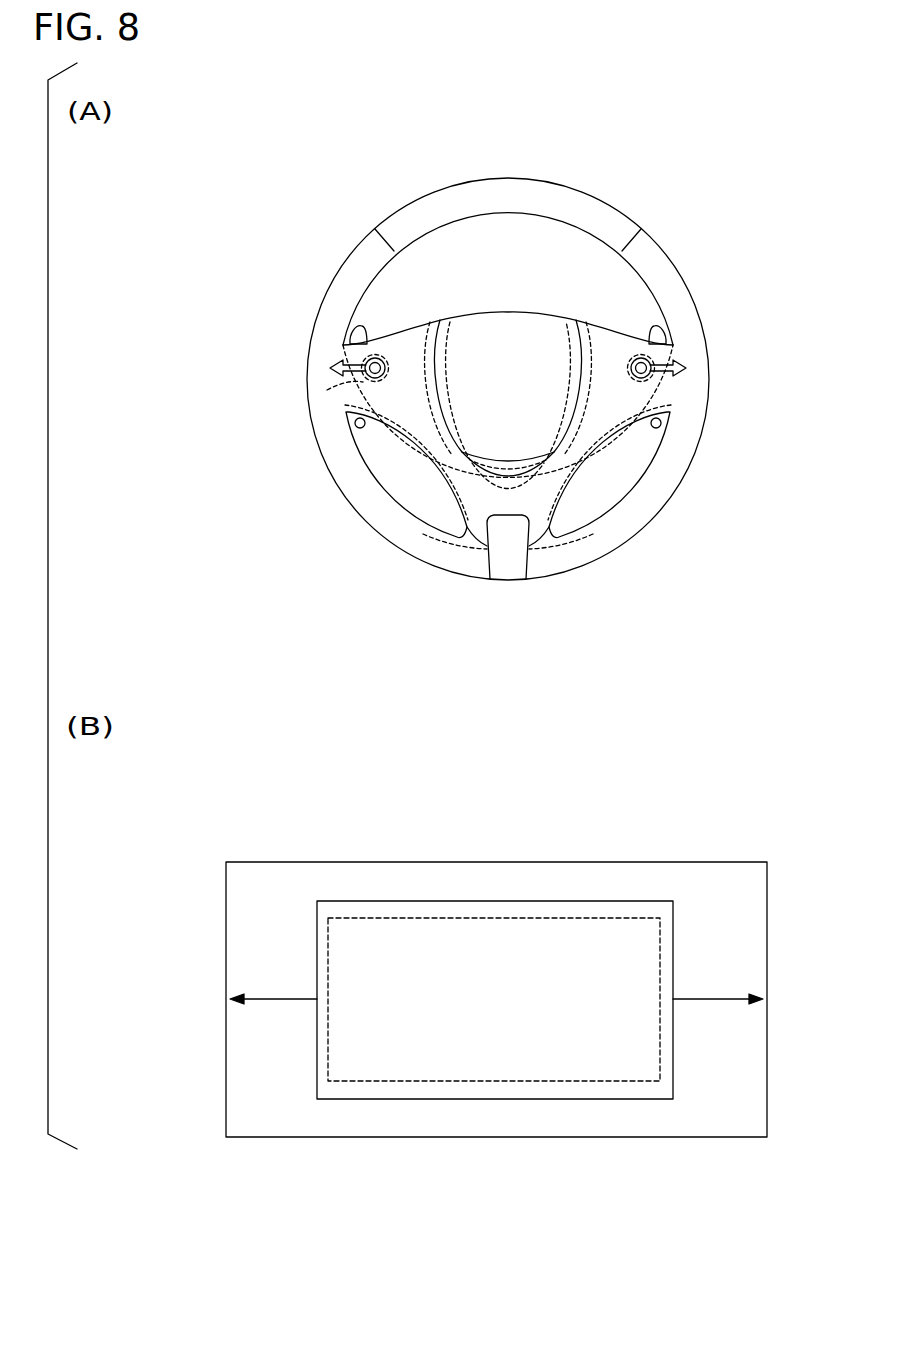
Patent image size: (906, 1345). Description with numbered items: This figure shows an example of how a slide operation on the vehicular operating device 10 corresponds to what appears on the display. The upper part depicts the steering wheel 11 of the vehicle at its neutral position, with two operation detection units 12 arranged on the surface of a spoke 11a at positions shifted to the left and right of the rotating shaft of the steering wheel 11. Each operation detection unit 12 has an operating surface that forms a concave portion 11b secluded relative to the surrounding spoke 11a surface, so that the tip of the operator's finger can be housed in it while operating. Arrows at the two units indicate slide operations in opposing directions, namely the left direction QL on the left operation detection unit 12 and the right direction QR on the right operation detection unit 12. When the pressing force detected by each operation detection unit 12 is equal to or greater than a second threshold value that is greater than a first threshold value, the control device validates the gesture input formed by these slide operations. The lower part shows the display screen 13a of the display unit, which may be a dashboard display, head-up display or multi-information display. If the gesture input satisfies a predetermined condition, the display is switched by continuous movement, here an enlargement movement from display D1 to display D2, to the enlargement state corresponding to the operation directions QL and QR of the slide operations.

The vehicular operating device 10 is at (707, 205).
The steering wheel 11 is at (510, 187).
The spoke 11a is at (366, 385).
The concave portion 11b is at (362, 380).
The operation detection unit 12 is at (368, 361).
The display screen 13a is at (628, 900).
The display D1 is at (393, 917).
The display D2 is at (502, 861).
The left direction QL is at (332, 365).
The right direction QR is at (690, 373).